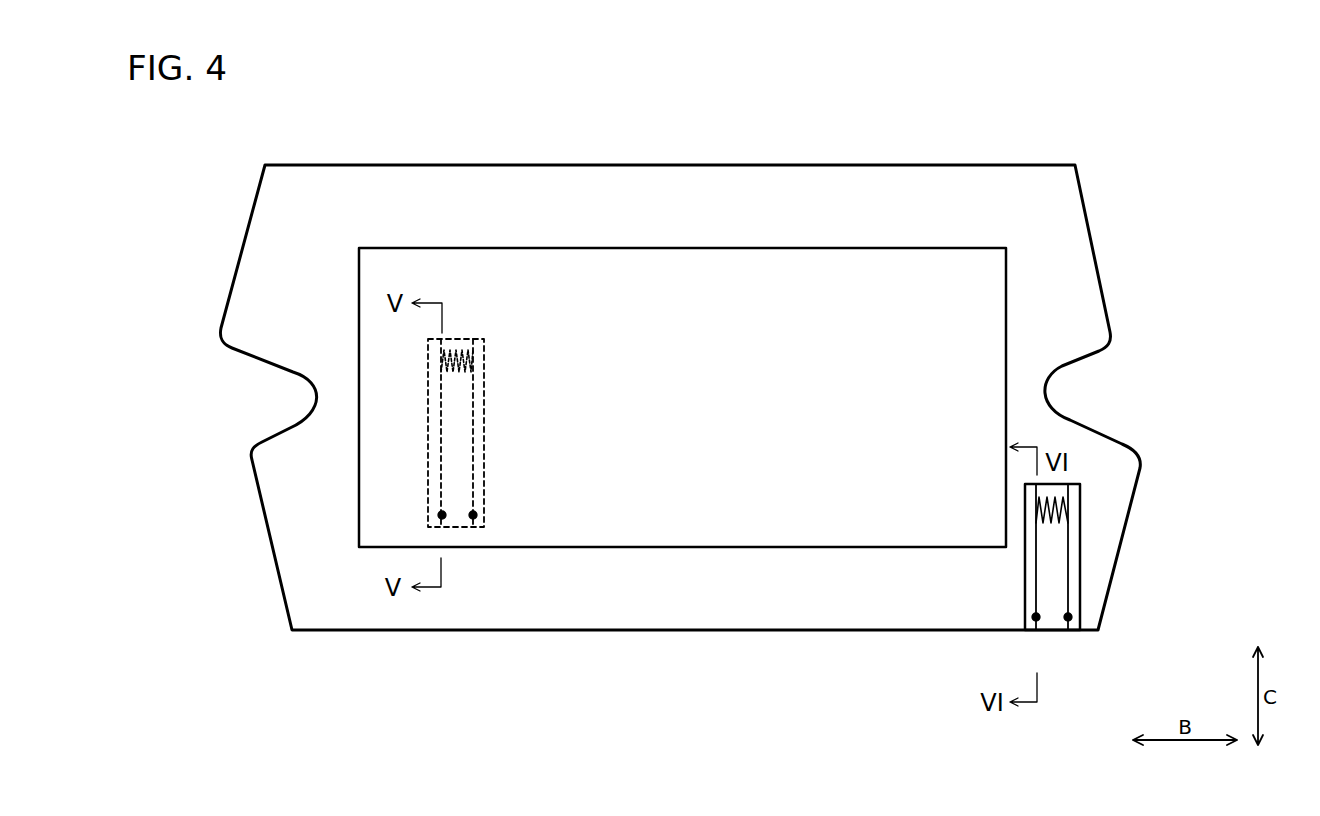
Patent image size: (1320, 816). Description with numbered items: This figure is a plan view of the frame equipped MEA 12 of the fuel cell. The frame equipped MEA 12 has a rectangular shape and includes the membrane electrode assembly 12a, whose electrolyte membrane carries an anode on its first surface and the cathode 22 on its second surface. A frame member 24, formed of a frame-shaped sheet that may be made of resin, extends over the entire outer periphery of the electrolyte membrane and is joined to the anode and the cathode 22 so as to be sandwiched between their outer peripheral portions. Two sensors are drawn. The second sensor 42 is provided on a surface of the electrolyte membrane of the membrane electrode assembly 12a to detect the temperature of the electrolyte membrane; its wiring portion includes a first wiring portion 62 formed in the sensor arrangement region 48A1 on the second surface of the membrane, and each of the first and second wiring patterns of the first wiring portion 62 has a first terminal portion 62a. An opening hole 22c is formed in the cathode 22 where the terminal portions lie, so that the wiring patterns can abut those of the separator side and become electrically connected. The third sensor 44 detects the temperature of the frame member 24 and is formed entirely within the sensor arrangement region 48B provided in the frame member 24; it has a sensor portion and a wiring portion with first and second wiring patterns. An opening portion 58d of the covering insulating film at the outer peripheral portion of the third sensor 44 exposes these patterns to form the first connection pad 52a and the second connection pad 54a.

The frame equipped MEA 12 is at (953, 165).
The membrane electrode assembly 12a is at (787, 248).
The cathode 22 is at (683, 267).
The opening hole 22c is at (440, 515).
The frame member 24 is at (868, 192).
The second sensor 42 is at (465, 467).
The third sensor 44 is at (1059, 580).
The sensor arrangement region 48A1 is at (451, 433).
The sensor arrangement region 48B is at (1059, 580).
The first connection pad 52a is at (1042, 620).
The second connection pad 54a is at (1072, 617).
The opening portion 58d is at (1035, 622).
The first wiring portion 62 is at (427, 381).
The first terminal portion 62a is at (473, 519).